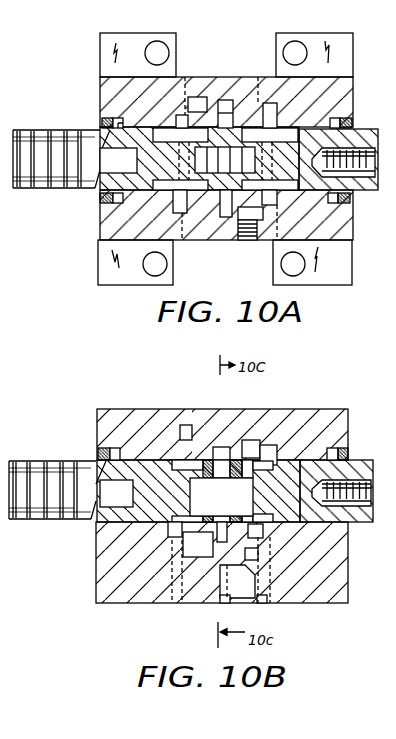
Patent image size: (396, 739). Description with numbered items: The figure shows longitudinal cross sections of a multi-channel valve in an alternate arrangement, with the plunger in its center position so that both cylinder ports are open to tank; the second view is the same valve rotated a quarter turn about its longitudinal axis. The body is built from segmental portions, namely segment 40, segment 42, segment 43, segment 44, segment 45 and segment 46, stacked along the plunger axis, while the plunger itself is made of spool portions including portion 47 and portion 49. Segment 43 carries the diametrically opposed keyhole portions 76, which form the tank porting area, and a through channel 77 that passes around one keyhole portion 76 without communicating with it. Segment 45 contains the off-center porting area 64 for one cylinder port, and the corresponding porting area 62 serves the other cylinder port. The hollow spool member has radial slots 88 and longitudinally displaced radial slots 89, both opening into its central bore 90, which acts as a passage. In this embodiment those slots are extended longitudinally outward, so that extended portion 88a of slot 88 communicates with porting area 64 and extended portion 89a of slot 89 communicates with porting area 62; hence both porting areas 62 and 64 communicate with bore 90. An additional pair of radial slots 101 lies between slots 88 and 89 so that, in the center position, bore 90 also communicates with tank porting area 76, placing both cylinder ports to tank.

In FIG. 10A, the body segment 40 is at (233, 159).
In FIG. 10A, the body segment 42 is at (257, 78).
In FIG. 10A, the body segment 43 is at (224, 78).
In FIG. 10A, the body segment 44 is at (201, 78).
In FIG. 10A, the body segment 45 is at (183, 77).
In FIG. 10A, the body segment 46 is at (107, 98).
In FIG. 10A, the plunger portion 47 is at (367, 192).
In FIG. 10B, the plunger portion 47 is at (365, 525).
In FIG. 10A, the plunger portion 49 is at (97, 127).
In FIG. 10B, the plunger portion 49 is at (97, 460).
In FIG. 10A, the through channel 77 is at (228, 118).
In FIG. 10B, the porting area 62 is at (222, 489).
In FIG. 10B, the porting area 64 is at (173, 450).
In FIG. 10B, the keyhole portion 76 is at (223, 450).
In FIG. 10B, the radial slot 88 is at (198, 472).
In FIG. 10B, the extended portion of slot 88a is at (140, 490).
In FIG. 10B, the radial slot 89 is at (242, 462).
In FIG. 10B, the extended portion of slot 89a is at (252, 460).
In FIG. 10B, the central bore 90 is at (229, 491).
In FIG. 10B, the radial slot 101 is at (218, 472).